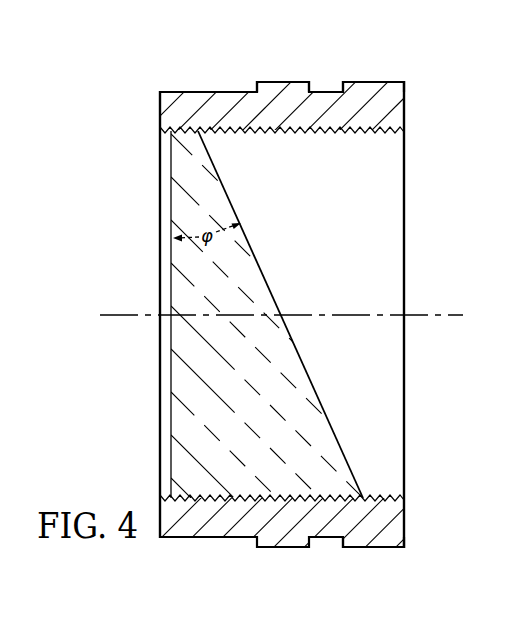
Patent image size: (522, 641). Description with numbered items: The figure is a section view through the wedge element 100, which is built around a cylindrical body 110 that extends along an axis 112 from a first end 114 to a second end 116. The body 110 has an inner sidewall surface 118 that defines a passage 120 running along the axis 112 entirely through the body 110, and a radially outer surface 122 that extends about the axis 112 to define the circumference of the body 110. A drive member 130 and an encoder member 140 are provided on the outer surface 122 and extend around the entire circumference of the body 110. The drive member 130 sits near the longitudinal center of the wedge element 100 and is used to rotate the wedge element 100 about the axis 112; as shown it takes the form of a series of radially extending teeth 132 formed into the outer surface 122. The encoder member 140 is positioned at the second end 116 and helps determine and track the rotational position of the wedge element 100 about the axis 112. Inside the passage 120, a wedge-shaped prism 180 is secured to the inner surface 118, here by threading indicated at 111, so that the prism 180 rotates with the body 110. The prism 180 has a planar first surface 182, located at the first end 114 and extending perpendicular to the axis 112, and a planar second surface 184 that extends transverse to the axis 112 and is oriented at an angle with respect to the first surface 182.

The wedge element 100 is at (192, 550).
The cylindrical body 110 is at (398, 116).
The threaded connection 111 is at (172, 130).
The axis 112 is at (442, 318).
The first end 114 is at (152, 84).
The second end 116 is at (413, 67).
The inner sidewall surface 118 is at (355, 133).
The passage 120 is at (392, 214).
The radially outer surface 122 is at (200, 91).
The drive member 130 is at (297, 67).
The radially extending teeth 132 is at (270, 83).
The encoder member 140 is at (384, 548).
The wedge-shaped prism 180 is at (275, 443).
The first surface 182 is at (170, 412).
The second surface 184 is at (271, 292).